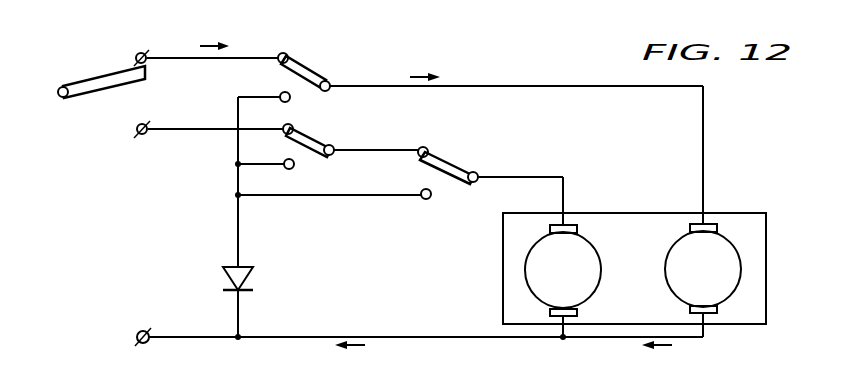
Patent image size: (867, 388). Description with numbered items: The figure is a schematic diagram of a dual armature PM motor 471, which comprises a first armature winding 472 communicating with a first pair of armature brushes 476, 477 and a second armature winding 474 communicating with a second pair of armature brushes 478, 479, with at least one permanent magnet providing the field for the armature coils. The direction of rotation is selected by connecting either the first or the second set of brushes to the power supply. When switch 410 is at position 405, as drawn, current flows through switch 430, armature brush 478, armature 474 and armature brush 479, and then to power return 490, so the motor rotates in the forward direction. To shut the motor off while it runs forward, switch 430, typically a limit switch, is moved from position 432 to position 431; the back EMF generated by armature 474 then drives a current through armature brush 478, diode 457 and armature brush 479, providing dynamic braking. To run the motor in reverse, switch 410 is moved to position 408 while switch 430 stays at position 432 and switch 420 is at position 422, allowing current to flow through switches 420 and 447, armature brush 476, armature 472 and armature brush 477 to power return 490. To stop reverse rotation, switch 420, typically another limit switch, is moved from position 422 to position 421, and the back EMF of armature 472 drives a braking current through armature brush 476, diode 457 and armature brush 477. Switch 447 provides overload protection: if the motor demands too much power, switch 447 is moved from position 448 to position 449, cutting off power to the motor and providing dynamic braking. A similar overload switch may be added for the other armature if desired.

The position 405 is at (136, 54).
The switch 410 is at (67, 100).
The position 432 is at (287, 52).
The switch 430 is at (329, 80).
The position 431 is at (278, 94).
The position 408 is at (140, 136).
The position 422 is at (296, 126).
The switch 420 is at (336, 145).
The position 421 is at (295, 168).
The position 448 is at (428, 146).
The switch 447 is at (472, 183).
The position 449 is at (450, 209).
The diode 457 is at (226, 275).
The power return 490 is at (141, 330).
The dual armature PM motor 471 is at (735, 213).
The first armature winding 472 is at (525, 263).
The second armature winding 474 is at (740, 256).
The armature brush 476 is at (568, 224).
The armature brush 477 is at (555, 318).
The armature brush 478 is at (690, 224).
The armature brush 479 is at (712, 310).